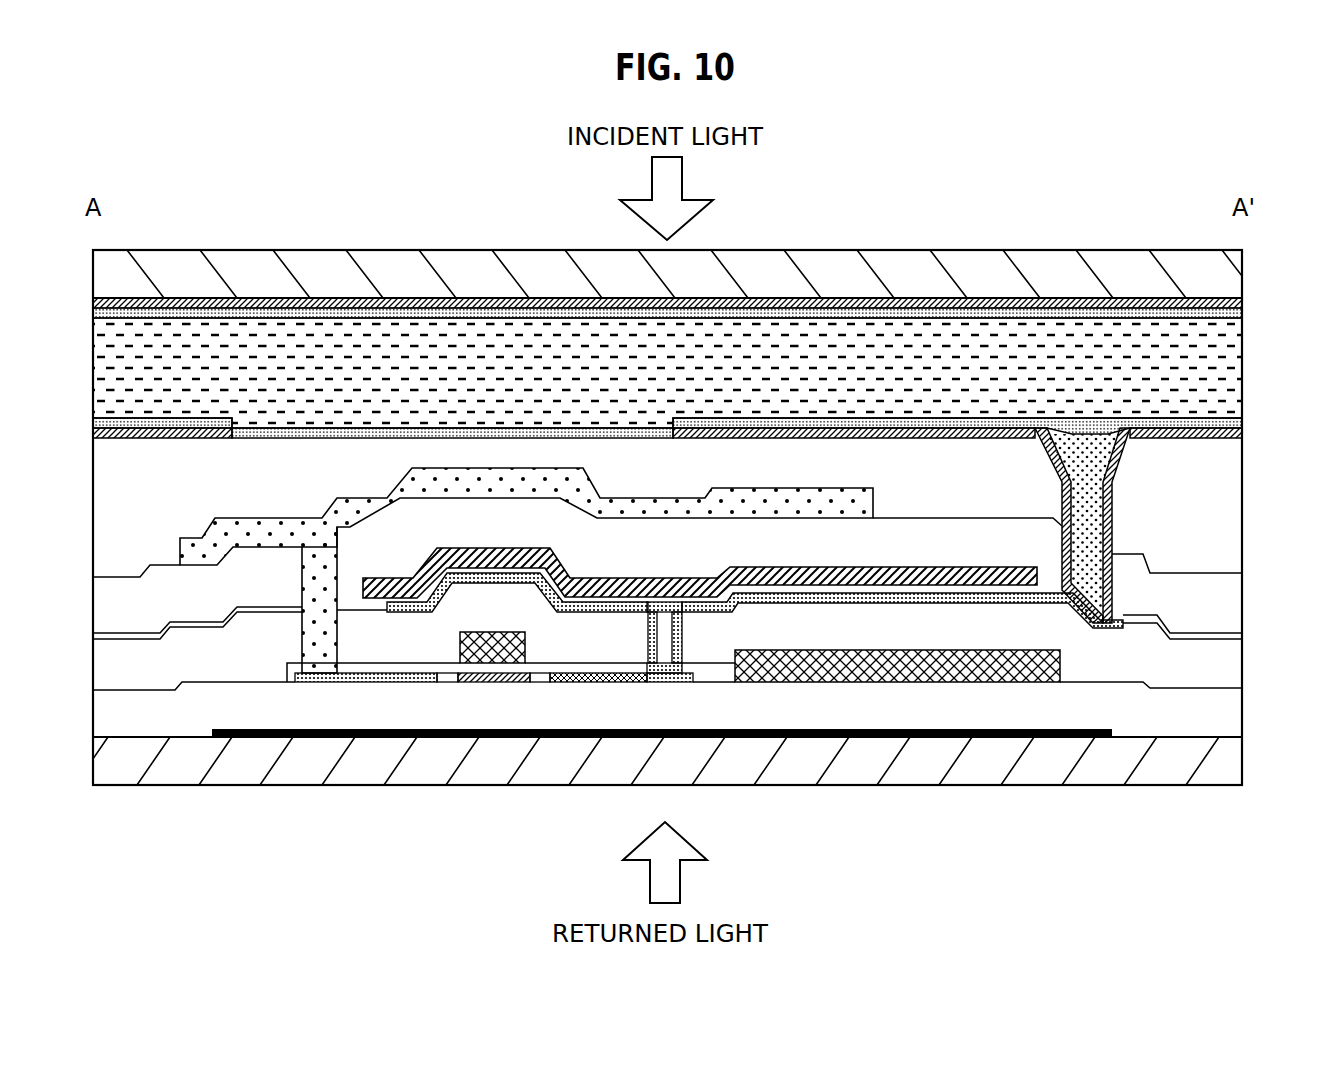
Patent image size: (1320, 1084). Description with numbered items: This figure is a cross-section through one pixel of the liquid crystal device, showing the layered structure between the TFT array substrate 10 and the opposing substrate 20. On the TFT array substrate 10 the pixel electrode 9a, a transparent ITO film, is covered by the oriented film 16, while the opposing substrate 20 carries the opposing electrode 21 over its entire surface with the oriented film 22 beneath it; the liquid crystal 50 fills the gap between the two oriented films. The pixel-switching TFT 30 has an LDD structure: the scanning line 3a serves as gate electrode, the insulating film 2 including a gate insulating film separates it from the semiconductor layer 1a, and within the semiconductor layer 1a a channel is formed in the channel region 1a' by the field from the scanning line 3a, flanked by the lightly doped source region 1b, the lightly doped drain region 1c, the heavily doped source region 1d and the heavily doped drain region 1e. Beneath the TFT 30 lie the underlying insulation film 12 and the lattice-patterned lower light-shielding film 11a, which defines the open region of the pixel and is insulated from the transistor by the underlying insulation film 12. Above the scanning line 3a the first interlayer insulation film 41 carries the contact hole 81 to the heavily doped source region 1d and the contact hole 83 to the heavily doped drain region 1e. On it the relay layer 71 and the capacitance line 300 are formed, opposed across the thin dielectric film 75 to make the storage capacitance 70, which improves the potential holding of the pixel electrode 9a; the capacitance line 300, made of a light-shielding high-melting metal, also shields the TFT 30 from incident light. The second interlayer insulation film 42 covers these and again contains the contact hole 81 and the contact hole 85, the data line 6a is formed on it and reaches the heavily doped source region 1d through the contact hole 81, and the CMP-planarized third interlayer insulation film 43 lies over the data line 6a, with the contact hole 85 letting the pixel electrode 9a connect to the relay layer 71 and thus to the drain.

The opposing substrate 20 is at (1242, 273).
The opposing electrode 21 is at (1242, 303).
The oriented film 22 is at (1242, 313).
The liquid crystal 50 is at (1242, 380).
The oriented film 16 is at (1242, 423).
The pixel electrode 9a is at (150, 438).
The contact hole 85 is at (1117, 499).
The third interlayer insulation film 43 is at (1242, 513).
The data line 6a is at (628, 499).
The contact hole 81 is at (305, 584).
The second interlayer insulation film 42 is at (1242, 600).
The dielectric film 75 is at (1242, 636).
The relay layer 71 is at (862, 602).
The capacitance line 300 is at (858, 570).
The storage capacitance 70 is at (363, 625).
The contact hole 83 is at (667, 641).
The scanning line 3a is at (488, 640).
The insulating film 2 is at (285, 683).
The semiconductor layer 1a is at (366, 698).
The heavily doped source region 1d is at (393, 683).
The lightly doped source region 1b is at (447, 683).
The channel region 1a' is at (498, 698).
The lightly doped drain region 1c is at (543, 683).
The heavily doped drain region 1e is at (633, 683).
The first interlayer insulation film 41 is at (1242, 665).
The underlying insulation film 12 is at (1242, 713).
The lower light-shielding film 11a is at (1062, 729).
The TFT array substrate 10 is at (1242, 760).
The TFT 30 is at (703, 800).